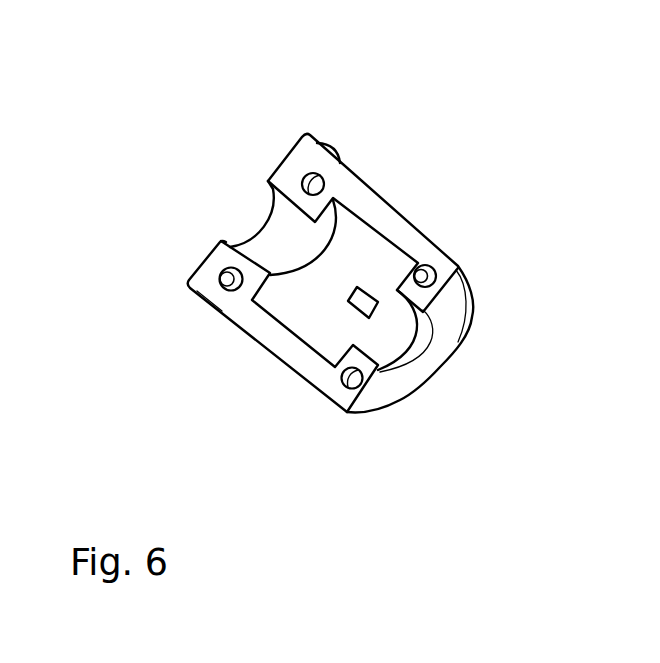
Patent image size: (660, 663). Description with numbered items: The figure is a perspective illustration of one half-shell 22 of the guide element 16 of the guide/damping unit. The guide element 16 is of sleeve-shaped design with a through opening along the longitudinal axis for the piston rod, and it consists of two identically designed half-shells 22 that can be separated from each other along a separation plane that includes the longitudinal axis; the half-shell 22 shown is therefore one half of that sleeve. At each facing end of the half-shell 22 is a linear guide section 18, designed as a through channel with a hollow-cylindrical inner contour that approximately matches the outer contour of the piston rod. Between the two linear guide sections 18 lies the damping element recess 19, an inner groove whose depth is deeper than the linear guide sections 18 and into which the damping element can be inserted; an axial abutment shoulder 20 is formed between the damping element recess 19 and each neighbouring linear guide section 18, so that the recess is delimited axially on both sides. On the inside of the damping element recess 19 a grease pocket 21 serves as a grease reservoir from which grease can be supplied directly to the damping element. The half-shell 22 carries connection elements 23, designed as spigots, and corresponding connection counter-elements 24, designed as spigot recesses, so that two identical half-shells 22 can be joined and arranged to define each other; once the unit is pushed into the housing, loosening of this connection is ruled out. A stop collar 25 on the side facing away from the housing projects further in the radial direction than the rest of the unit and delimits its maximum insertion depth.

The guide element 16 is at (302, 352).
The linear guide sections 18 is at (273, 228).
The damping element recess 19 is at (303, 333).
The axial abutment shoulder 20 is at (313, 330).
The grease pockets 21 is at (362, 292).
The half-shells 22 is at (423, 183).
The connection elements 23 is at (225, 276).
The connection counter-elements 24 is at (310, 182).
The stop collar 25 is at (194, 295).